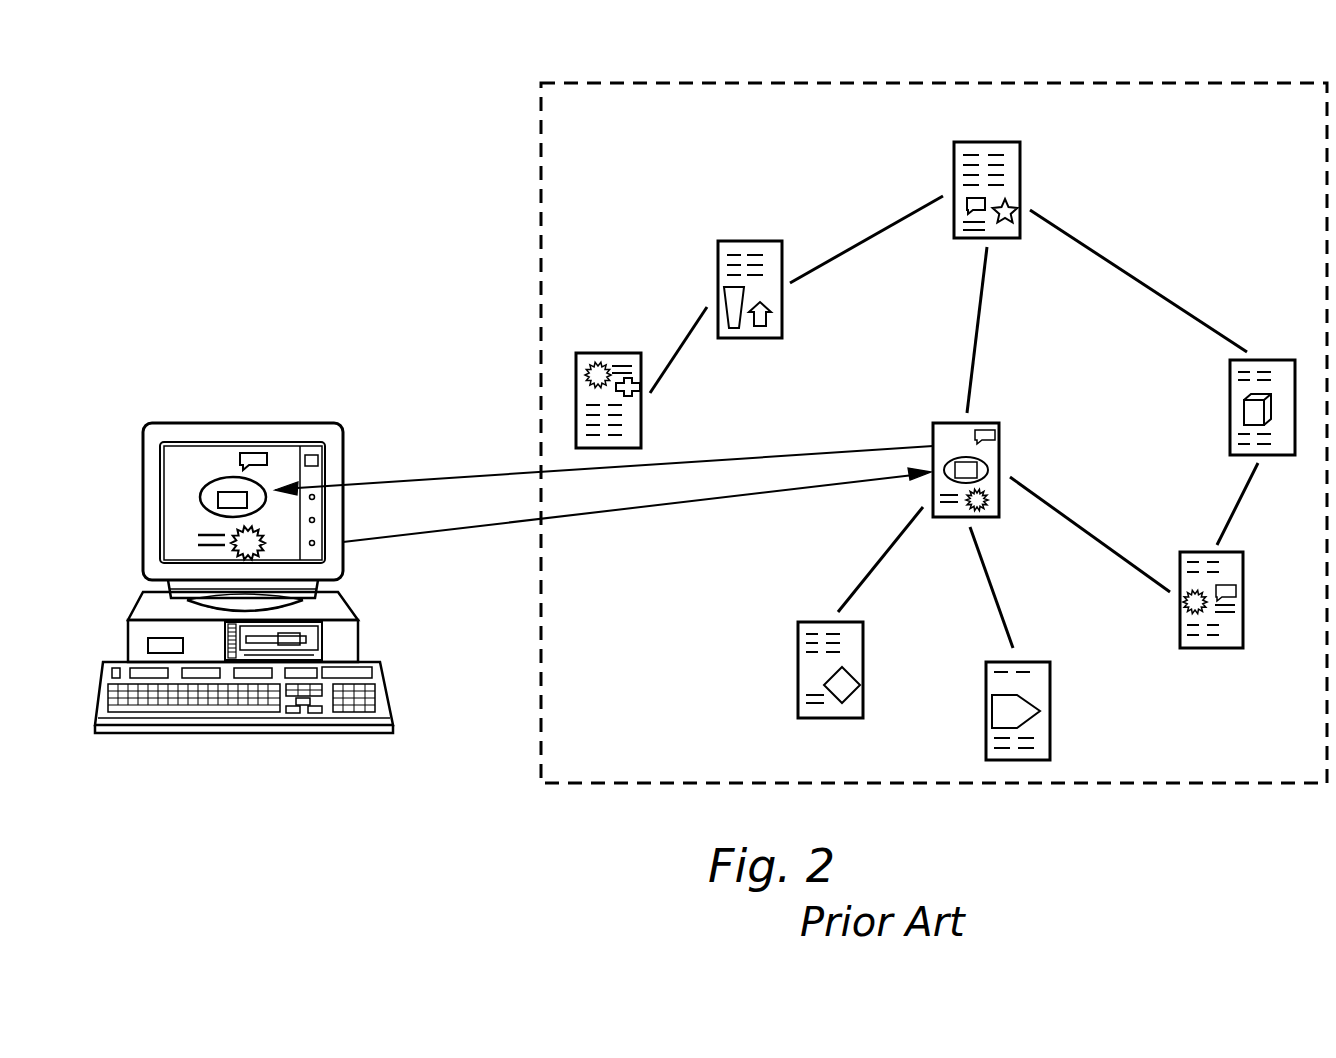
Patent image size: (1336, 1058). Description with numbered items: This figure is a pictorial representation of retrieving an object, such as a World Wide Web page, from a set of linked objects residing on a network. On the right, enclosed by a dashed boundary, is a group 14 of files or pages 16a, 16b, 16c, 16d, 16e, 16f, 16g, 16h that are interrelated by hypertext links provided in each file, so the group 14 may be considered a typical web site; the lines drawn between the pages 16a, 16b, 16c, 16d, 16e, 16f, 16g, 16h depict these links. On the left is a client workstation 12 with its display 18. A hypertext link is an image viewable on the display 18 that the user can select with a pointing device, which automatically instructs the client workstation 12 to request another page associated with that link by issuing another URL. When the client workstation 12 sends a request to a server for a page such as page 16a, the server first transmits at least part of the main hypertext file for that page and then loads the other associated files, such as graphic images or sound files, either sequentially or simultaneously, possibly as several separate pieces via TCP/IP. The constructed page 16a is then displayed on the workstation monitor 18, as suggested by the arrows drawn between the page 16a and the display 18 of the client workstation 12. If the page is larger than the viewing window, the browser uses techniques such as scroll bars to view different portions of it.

The client workstation 12 is at (141, 497).
The group of files or pages 14 is at (541, 244).
The display 18 is at (195, 454).
The page 16a is at (999, 455).
The page 16b is at (1020, 179).
The page 16c is at (718, 270).
The page 16d is at (576, 405).
The page 16e is at (1268, 360).
The page 16f is at (798, 662).
The page 16g is at (986, 711).
The page 16h is at (1212, 648).